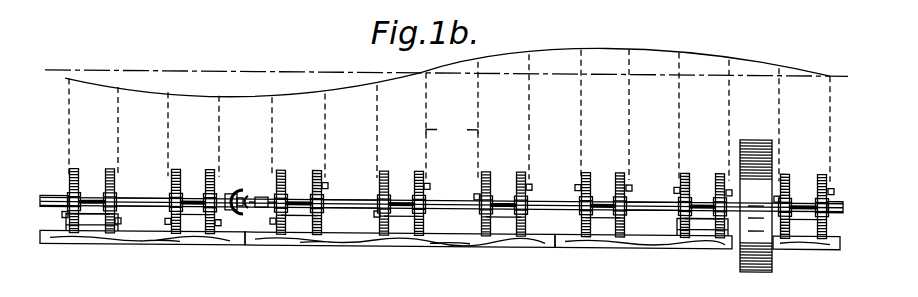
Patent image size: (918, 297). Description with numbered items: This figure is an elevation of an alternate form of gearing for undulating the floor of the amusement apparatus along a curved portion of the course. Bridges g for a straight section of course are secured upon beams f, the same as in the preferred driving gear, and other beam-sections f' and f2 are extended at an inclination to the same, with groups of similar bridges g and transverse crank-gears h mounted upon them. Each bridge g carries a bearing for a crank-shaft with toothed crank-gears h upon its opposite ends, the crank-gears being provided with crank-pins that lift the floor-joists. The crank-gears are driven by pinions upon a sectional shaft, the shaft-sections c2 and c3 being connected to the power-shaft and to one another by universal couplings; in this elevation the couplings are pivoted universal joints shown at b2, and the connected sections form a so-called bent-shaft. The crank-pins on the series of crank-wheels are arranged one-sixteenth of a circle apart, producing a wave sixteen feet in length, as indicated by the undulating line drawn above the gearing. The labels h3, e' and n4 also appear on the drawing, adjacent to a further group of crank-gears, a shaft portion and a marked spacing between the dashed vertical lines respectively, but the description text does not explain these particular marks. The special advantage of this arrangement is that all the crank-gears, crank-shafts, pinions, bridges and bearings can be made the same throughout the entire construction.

The crank-gear h is at (108, 166).
The gear wheels h3 is at (578, 182).
The shaft-section c3 is at (143, 183).
The shaft-section c2 is at (350, 185).
The shaft section e' is at (652, 192).
The universal coupling b2 is at (243, 188).
The spacing mark n4 is at (452, 123).
The beam-section f2 is at (160, 243).
The beam-section f' is at (400, 257).
The beam f is at (697, 262).
The bridge g is at (94, 226).